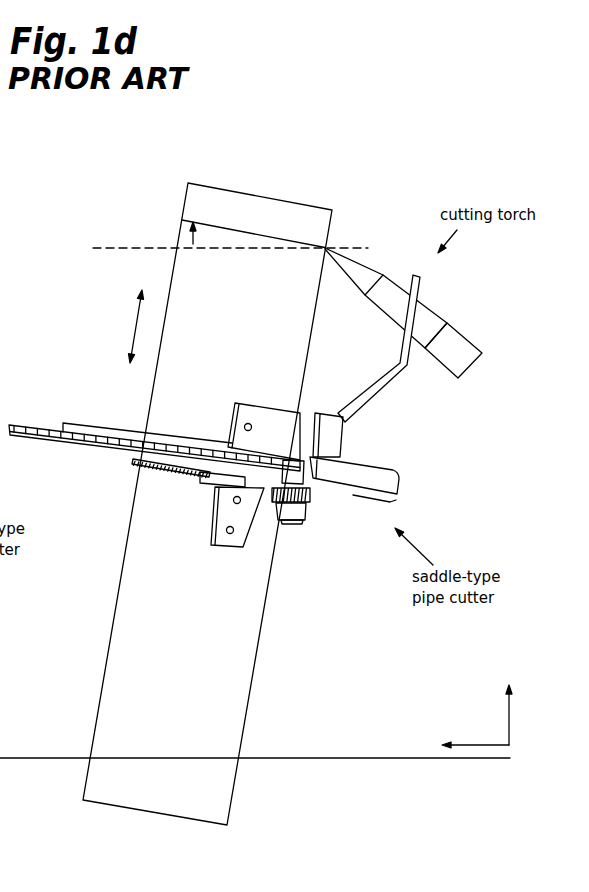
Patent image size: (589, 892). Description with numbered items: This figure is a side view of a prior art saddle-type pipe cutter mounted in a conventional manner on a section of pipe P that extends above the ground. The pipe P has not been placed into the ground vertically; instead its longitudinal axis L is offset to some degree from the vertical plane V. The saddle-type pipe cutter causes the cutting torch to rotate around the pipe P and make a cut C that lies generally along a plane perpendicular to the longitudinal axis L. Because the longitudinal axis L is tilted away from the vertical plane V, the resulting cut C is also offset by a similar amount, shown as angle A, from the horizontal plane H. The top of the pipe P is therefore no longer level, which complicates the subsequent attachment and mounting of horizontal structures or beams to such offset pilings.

The pipe P is at (192, 670).
The cut C is at (180, 212).
The angle A is at (193, 243).
The horizontal plane H is at (108, 248).
The vertical plane V is at (510, 717).
The longitudinal axis L is at (135, 331).